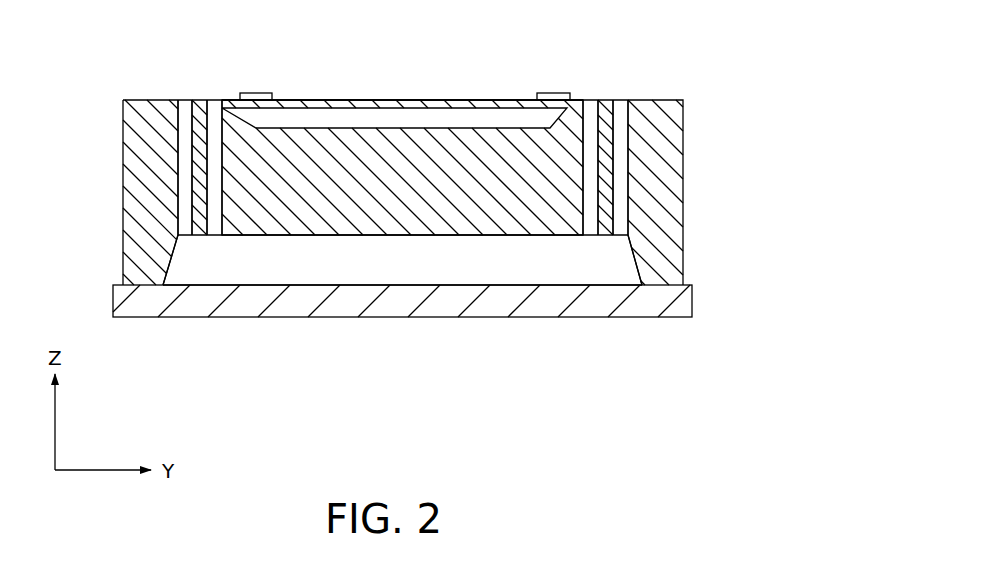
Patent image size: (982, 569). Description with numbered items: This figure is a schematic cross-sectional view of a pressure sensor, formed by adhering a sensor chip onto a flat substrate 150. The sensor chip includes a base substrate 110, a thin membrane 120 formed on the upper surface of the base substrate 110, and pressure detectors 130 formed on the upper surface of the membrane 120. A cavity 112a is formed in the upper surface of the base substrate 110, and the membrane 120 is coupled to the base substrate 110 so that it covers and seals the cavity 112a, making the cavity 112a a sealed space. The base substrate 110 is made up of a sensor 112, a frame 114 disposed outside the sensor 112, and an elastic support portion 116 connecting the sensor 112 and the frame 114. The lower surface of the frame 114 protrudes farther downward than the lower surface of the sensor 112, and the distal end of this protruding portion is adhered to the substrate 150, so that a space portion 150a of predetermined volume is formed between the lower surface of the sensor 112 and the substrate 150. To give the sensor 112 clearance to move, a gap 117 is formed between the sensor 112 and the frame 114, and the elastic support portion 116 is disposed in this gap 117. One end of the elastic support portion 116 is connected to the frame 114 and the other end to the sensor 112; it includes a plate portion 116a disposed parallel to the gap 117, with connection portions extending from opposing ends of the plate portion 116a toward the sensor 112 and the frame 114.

The base substrate 110 is at (692, 163).
The sensor 112 is at (419, 243).
The cavity 112a is at (406, 116).
The frame 114 is at (632, 262).
The elastic support portion 116 is at (603, 243).
The plate portion 116a is at (198, 175).
The gap 117 is at (219, 122).
The membrane 120 is at (475, 97).
The pressure detector 130 is at (553, 92).
The substrate 150 is at (690, 300).
The space portion 150a is at (334, 266).